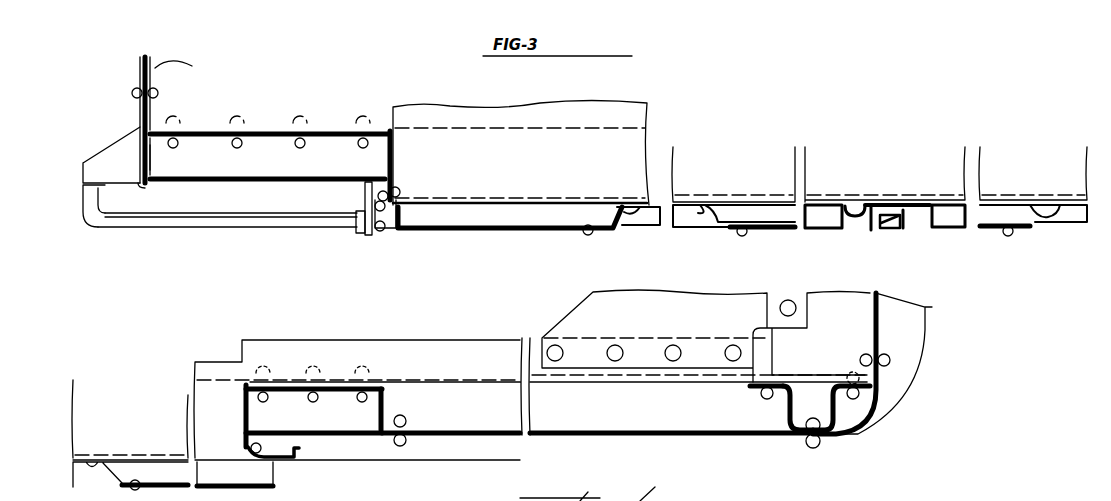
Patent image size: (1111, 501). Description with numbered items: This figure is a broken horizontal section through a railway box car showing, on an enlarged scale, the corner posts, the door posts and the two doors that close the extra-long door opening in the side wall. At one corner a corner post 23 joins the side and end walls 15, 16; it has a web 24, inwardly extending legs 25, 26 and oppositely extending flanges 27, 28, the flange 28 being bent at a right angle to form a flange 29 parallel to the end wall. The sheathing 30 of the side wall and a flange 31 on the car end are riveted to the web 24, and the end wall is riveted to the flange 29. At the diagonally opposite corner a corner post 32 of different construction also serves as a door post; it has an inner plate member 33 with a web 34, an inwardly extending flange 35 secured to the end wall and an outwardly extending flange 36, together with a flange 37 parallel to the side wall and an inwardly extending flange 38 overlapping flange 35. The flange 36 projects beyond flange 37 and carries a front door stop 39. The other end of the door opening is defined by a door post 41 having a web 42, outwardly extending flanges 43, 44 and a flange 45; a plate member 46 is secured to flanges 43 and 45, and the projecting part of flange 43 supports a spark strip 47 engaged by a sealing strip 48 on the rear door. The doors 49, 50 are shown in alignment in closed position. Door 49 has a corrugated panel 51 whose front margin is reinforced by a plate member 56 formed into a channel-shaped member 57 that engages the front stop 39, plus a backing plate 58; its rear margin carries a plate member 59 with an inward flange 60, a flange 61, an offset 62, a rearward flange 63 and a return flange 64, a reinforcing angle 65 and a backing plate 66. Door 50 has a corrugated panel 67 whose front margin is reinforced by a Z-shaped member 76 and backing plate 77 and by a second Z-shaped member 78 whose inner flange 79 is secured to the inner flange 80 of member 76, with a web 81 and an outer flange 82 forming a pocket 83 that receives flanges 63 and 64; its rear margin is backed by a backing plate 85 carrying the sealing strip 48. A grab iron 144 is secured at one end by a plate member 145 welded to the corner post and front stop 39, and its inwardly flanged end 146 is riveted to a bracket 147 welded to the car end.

The end wall 15 is at (158, 68).
The end wall 16 is at (881, 331).
The corner post 23 is at (849, 436).
The web 24 is at (820, 442).
The inwardly extending leg 25 is at (838, 411).
The inwardly extending leg 26 is at (786, 406).
The flange 27 is at (752, 389).
The flange 28 is at (861, 394).
The flange 29 is at (884, 362).
The sheathing 30 is at (458, 437).
The flange 31 is at (794, 440).
The corner post 32 is at (143, 186).
The inner plate member 33 is at (388, 128).
The web 34 is at (256, 128).
The inwardly extending flange 35 is at (138, 78).
The outwardly extending flange 36 is at (396, 172).
The flange 37 is at (276, 183).
The inwardly extending flange 38 is at (152, 157).
The front door stop 39 is at (378, 230).
The door post 41 is at (383, 388).
The web 42 is at (312, 386).
The outwardly extending flange 43 is at (243, 404).
The outwardly extending flange 44 is at (386, 416).
The flange 45 is at (407, 430).
The plate member 46 is at (349, 437).
The spark strip 47 is at (251, 447).
The sealing strip 48 is at (273, 456).
The door 49 is at (621, 225).
The door 50 is at (1043, 229).
The corrugated metallic panel 51 is at (712, 218).
The plate member 56 is at (538, 230).
The channel-shaped member 57 is at (392, 230).
The backing plate 58 is at (520, 201).
The plate member 59 is at (805, 228).
The inward flange 60 is at (845, 214).
The flange 61 is at (860, 208).
The offset 62 is at (880, 206).
The flange 63 is at (895, 208).
The return flange 64 is at (893, 230).
The reinforcing angle 65 is at (868, 214).
The reinforcing backing plate 66 is at (826, 200).
The corrugated metallic panel 67 is at (1072, 218).
The Z-shaped member 76 is at (931, 213).
The backing plate 77 is at (997, 200).
The Z-shaped member 78 is at (905, 226).
The inner flange 79 is at (910, 222).
The inner flange 80 is at (918, 205).
The web 81 is at (918, 216).
The outer flange 82 is at (881, 220).
The pocket 83 is at (898, 203).
The backing plate 85 is at (152, 462).
The grab iron 144 is at (263, 230).
The plate member 145 is at (364, 192).
The inward flange 146 is at (94, 215).
The bracket 147 is at (107, 162).